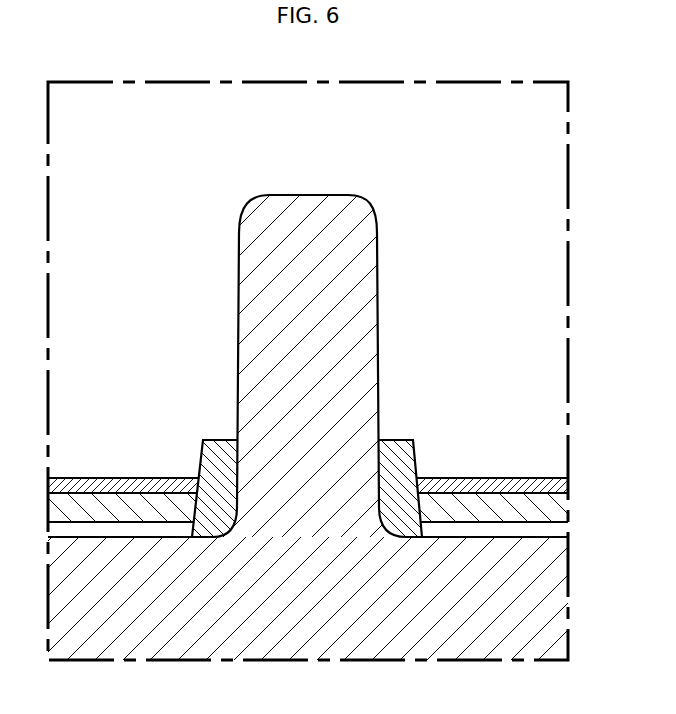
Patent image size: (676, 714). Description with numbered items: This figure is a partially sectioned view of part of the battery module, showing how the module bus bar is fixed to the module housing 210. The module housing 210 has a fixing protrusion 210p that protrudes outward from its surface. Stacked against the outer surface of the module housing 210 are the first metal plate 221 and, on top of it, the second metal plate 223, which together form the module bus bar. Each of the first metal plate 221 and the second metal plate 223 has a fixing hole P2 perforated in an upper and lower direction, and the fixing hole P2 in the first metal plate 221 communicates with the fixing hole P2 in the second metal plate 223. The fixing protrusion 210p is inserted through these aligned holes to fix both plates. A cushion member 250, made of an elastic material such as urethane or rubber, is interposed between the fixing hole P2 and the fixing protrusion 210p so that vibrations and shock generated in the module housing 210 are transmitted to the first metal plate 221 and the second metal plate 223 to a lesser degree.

The module housing 210 is at (111, 537).
The fixing protrusion 210p is at (308, 205).
The fixing hole P2 is at (196, 476).
The cushion member 250 is at (397, 450).
The first metal plate 221 is at (472, 484).
The second metal plate 223 is at (530, 500).